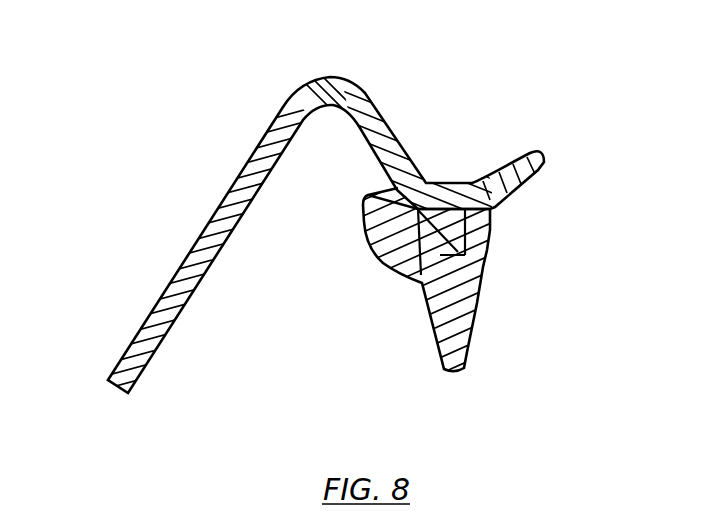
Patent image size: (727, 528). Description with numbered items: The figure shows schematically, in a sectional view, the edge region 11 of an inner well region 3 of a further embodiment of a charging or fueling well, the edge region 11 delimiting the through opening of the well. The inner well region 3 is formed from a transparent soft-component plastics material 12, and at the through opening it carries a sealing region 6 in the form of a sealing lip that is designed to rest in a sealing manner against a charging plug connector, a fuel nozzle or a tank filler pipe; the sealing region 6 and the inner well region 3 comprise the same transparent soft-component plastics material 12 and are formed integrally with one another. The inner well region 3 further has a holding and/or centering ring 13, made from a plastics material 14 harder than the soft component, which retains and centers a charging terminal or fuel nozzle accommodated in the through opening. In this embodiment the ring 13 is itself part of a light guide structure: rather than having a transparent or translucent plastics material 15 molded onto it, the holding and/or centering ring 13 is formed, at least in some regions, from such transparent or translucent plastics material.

The inner well region 3 is at (97, 198).
The edge region 11 is at (543, 93).
The transparent soft-component plastics material 12 is at (444, 128).
The sealing region 6 is at (591, 150).
The holding and/or centering ring 13 is at (524, 283).
The plastics material 14 is at (441, 242).
The transparent or translucent plastics material 15 is at (425, 276).